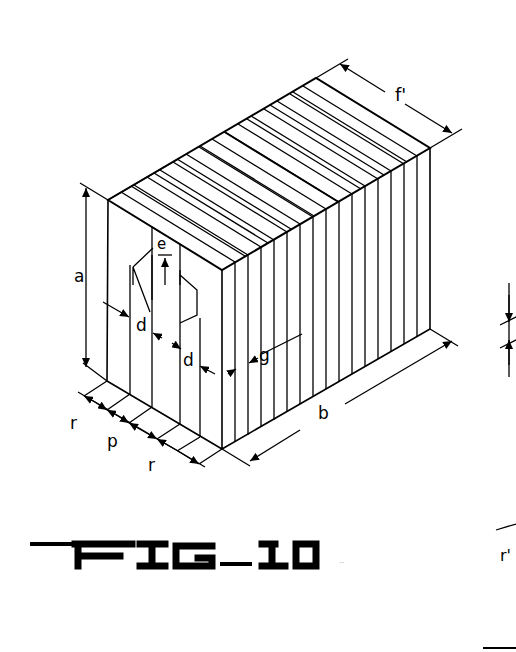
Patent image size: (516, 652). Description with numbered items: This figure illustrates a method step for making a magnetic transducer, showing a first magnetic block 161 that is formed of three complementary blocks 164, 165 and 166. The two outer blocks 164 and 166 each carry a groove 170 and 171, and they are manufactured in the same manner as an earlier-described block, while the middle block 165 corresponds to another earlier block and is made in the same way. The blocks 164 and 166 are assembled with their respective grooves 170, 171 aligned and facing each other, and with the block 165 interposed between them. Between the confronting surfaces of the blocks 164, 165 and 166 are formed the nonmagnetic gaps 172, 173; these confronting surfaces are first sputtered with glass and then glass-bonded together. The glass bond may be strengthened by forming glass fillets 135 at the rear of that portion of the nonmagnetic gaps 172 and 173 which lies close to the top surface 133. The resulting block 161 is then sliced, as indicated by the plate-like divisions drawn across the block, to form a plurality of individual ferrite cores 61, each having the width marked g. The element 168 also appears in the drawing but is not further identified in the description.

The first magnetic block 161 is at (223, 114).
The top surface 133 is at (290, 106).
The ferrite core 61 is at (130, 203).
The complementary block 164 is at (258, 160).
The complementary block 165 is at (304, 181).
The complementary block 166 is at (346, 194).
The nonmagnetic gap 173 is at (210, 223).
The nonmagnetic gap 172 is at (160, 224).
The groove 170 is at (136, 266).
The groove 171 is at (193, 292).
The glass fillet 135 is at (150, 256).
The plate spacing 168 is at (515, 412).